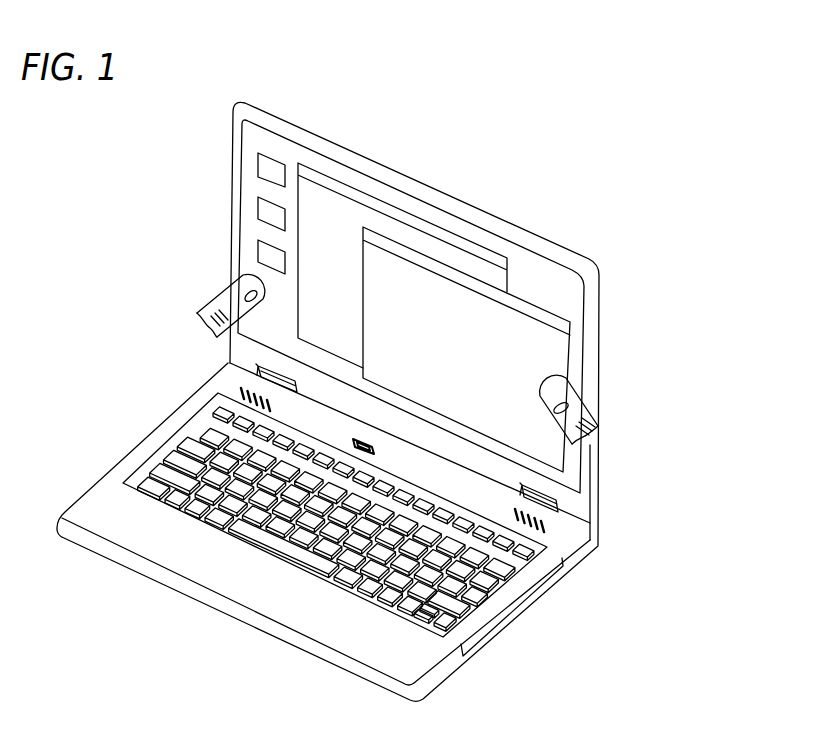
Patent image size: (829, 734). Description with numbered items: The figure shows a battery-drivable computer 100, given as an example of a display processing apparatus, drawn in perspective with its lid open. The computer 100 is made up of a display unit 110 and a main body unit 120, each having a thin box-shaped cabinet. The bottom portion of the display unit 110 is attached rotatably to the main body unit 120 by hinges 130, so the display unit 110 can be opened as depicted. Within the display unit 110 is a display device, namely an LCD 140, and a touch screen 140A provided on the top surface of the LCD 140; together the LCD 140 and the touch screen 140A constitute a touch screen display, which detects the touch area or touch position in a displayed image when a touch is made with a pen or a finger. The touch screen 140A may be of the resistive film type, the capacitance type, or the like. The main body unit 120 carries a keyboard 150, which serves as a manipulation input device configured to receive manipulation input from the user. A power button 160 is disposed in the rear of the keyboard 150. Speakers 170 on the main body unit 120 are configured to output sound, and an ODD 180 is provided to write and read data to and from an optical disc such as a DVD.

The computer 100 is at (567, 189).
The display unit 110 is at (607, 267).
The main body unit 120 is at (447, 668).
The hinges 130 is at (561, 507).
The display device (LCD) 140 is at (574, 297).
The touch screen 140A is at (574, 325).
The keyboard 150 is at (548, 543).
The power button 160 is at (352, 446).
The speakers 170 is at (242, 392).
The ODD 180 is at (512, 607).